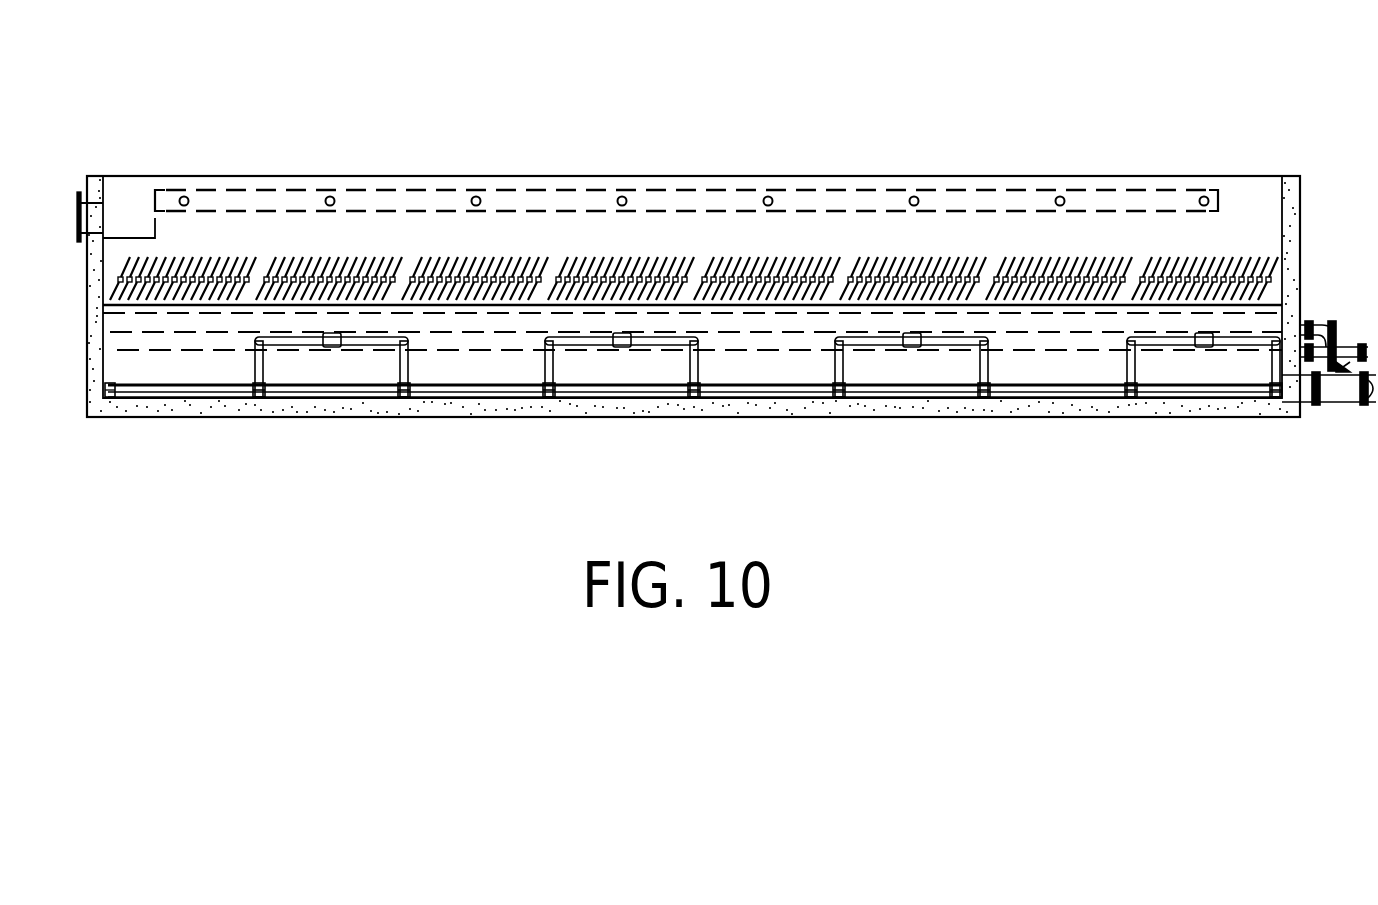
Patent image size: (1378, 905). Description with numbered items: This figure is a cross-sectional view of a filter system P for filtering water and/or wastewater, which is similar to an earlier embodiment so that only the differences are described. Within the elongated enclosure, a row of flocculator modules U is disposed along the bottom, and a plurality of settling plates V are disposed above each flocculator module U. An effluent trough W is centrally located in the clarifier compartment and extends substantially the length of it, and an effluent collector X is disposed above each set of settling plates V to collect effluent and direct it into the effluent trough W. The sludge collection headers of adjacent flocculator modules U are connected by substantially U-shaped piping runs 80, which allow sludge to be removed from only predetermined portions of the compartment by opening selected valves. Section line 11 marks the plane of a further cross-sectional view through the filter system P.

The filter system P is at (1188, 117).
The effluent trough W is at (422, 188).
The effluent collector X is at (766, 196).
The settling plates V is at (224, 248).
The flocculator module U is at (199, 392).
The piping run 80 is at (362, 345).
The section line 11- 11 is at (1093, 140).